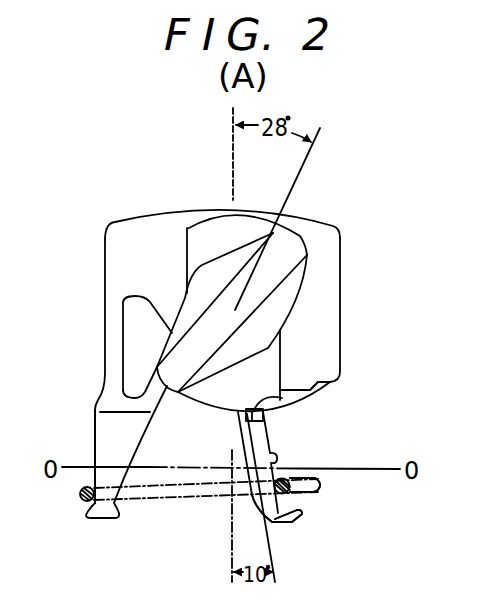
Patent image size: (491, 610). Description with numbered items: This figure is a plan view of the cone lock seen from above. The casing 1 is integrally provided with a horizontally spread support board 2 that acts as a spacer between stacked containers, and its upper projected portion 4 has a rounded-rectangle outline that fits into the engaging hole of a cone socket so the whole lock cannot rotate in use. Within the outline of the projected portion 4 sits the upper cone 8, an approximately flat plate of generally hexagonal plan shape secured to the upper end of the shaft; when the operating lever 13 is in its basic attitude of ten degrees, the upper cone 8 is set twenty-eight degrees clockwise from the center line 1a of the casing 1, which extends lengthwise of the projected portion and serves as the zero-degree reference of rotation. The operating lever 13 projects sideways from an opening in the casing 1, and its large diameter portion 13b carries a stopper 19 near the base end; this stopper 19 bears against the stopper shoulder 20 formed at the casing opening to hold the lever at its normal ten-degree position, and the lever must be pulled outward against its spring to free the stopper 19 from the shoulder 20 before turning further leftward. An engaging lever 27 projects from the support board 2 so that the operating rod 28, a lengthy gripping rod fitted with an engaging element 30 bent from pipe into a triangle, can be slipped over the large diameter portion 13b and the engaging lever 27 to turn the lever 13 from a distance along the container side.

The casing 1 is at (184, 227).
The center line 1a is at (232, 540).
The support board 2 is at (118, 262).
The projected portion 4 is at (264, 370).
The upper cone 8 is at (285, 255).
The operating lever 13 is at (259, 436).
The large diameter portion 13b is at (325, 469).
The stopper 19 is at (244, 416).
The stopper shoulder 20 is at (322, 386).
The engaging lever 27 is at (107, 458).
The operating rod 28 is at (318, 486).
The engaging element 30 is at (353, 512).